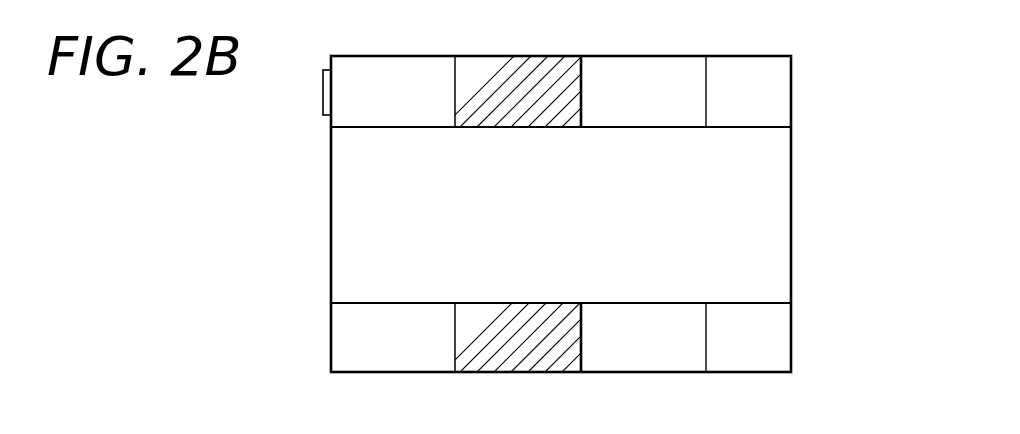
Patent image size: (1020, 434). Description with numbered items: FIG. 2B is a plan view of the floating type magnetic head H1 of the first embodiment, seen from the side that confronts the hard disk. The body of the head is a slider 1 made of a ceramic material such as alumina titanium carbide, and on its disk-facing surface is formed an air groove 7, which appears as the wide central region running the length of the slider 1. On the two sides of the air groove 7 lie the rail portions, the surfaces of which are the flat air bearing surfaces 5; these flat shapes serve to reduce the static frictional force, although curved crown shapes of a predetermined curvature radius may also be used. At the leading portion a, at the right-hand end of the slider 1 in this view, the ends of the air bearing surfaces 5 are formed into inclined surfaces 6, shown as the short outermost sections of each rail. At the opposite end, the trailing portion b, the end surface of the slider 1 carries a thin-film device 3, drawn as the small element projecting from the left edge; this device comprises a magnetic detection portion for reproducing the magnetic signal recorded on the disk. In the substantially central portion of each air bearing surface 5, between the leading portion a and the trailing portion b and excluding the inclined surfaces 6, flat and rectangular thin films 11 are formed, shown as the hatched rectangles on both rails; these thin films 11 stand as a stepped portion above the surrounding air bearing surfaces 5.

The slider 1 is at (321, 216).
The thin-film device 3 is at (323, 98).
The air bearing surfaces 5 is at (664, 67).
The inclined surfaces 6 is at (753, 67).
The air groove 7 is at (780, 282).
The thin films 11 is at (541, 65).
The leading portion a is at (797, 180).
The trailing portion b is at (322, 272).
The floating type magnetic head H1 is at (806, 248).